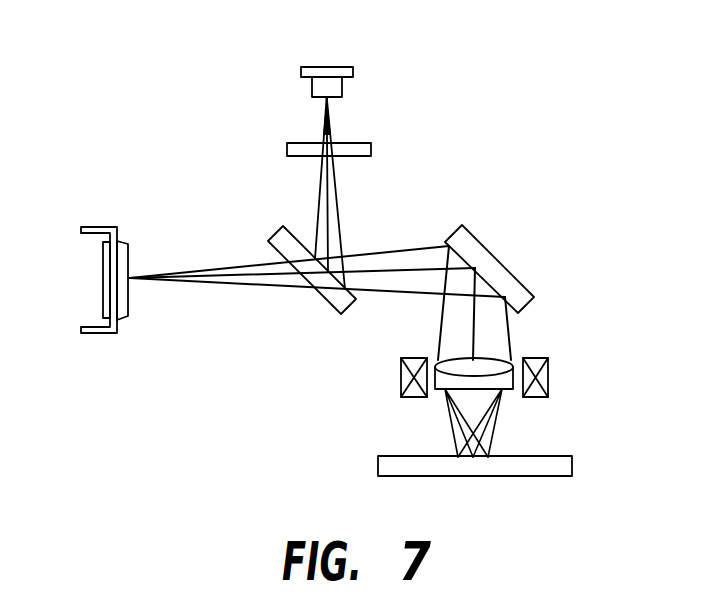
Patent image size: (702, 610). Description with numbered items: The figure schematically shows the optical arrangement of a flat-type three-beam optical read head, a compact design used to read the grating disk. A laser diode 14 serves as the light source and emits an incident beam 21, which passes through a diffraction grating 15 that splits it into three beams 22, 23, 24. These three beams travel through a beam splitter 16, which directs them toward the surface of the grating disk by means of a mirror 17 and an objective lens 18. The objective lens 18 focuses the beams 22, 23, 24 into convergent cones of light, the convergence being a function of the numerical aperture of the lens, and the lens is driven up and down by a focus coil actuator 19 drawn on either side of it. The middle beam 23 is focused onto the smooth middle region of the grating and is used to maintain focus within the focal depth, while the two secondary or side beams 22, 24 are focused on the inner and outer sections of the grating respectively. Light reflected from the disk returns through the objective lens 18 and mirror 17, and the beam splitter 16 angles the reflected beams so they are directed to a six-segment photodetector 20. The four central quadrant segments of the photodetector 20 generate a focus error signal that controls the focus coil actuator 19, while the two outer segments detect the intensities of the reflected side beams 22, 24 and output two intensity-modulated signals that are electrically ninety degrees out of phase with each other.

The laser diode 14 is at (353, 71).
The diffraction grating 15 is at (371, 150).
The beam splitter 16 is at (325, 306).
The mirror 17 is at (492, 253).
The objective lens 18 is at (496, 336).
The focus coil actuator 19 is at (548, 379).
The six-segment photodetector 20 is at (102, 280).
The incident beam 21 is at (342, 121).
The side beam 22 is at (317, 213).
The middle beam 23 is at (326, 181).
The side beam 24 is at (338, 195).